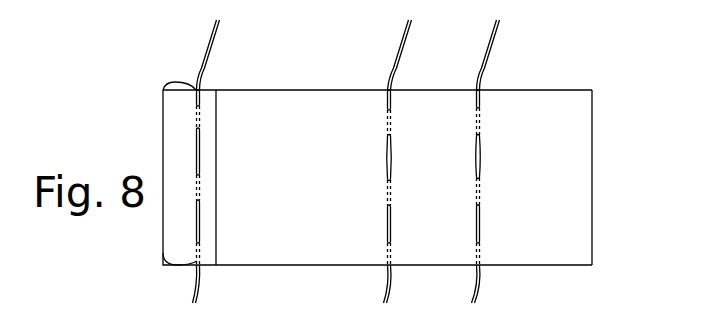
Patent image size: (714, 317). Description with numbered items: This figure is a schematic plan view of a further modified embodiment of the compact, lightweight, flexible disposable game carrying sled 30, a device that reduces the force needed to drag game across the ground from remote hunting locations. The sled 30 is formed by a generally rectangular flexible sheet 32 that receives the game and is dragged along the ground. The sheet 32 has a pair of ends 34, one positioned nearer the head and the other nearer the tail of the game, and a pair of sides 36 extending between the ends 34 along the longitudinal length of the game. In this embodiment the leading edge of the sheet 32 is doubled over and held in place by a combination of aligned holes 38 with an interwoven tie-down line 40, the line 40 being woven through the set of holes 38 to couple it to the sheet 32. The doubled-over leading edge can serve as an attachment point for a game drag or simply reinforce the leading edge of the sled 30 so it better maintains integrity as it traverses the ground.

The game carrying sled 30 is at (283, 51).
The flexible sheet 32 is at (287, 156).
The end 34 is at (597, 152).
The side 36 is at (545, 90).
The holes 38 is at (483, 160).
The tie-down line 40 is at (487, 50).